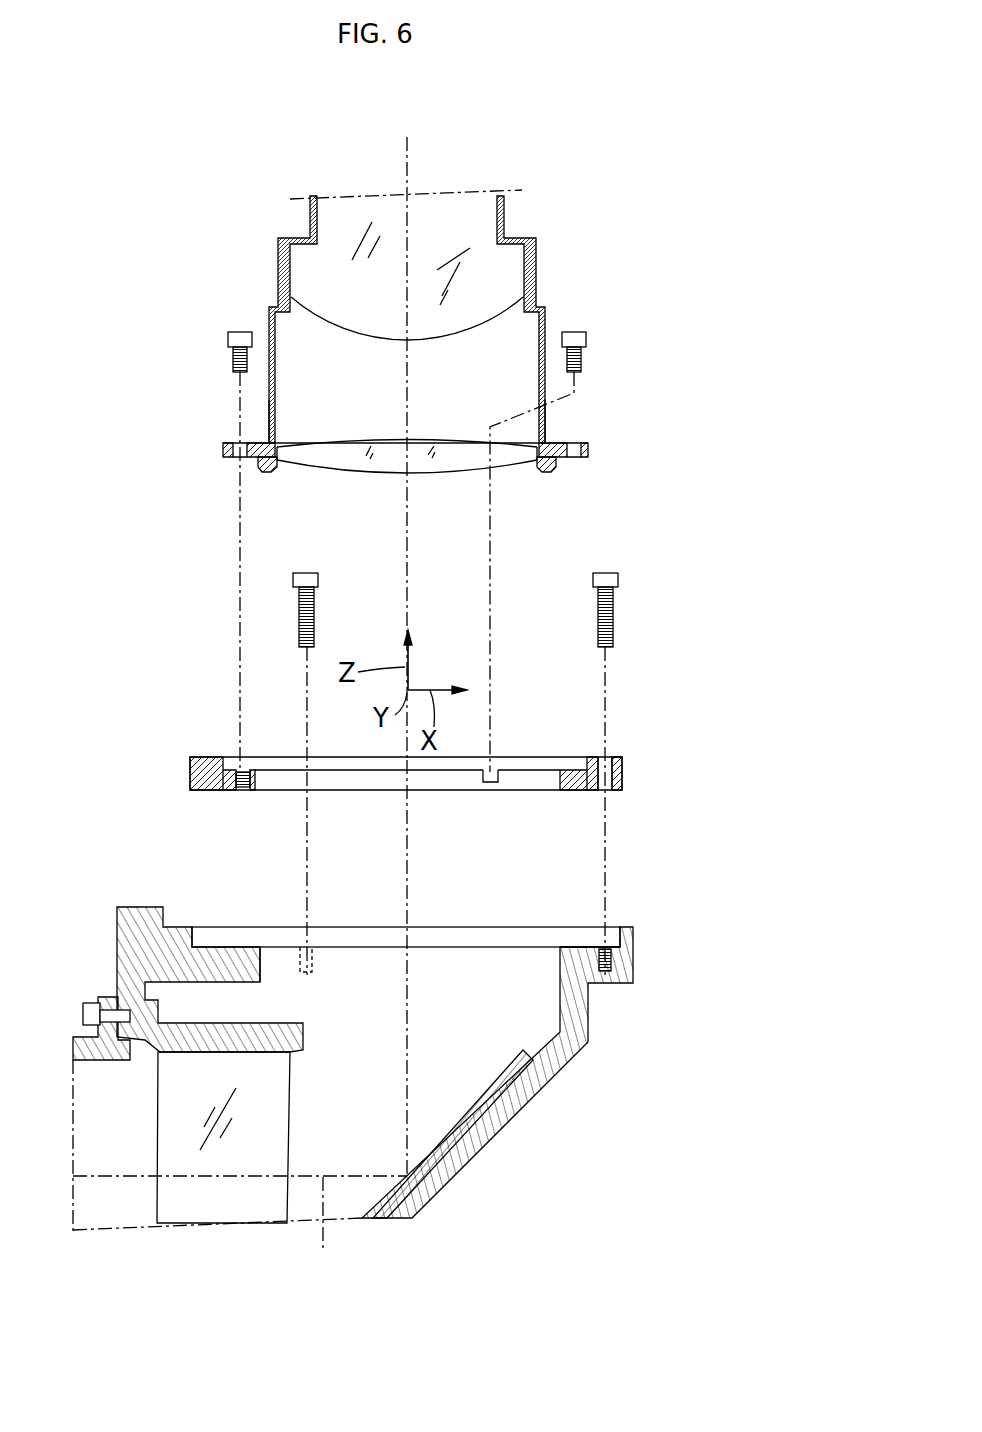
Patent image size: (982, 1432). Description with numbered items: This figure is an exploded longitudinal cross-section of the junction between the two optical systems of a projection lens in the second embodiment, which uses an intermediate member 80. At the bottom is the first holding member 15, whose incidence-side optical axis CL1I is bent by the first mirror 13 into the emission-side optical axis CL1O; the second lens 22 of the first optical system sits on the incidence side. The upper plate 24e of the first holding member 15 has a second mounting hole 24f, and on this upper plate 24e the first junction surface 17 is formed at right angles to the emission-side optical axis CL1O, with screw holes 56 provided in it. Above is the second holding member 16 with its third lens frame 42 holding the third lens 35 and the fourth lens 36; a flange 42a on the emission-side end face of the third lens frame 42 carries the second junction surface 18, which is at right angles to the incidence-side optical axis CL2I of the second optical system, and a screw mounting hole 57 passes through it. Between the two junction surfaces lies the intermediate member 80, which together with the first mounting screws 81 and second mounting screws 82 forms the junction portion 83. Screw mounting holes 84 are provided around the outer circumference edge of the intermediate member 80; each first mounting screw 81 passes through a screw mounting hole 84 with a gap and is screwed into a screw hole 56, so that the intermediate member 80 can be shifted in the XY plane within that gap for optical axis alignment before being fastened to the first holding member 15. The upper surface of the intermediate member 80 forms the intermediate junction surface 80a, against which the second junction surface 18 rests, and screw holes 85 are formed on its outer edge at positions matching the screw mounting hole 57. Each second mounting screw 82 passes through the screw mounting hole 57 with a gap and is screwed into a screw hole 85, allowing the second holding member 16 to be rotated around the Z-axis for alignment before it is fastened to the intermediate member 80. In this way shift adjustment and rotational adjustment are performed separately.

The first mirror 13 is at (563, 1067).
The first holding member 15 is at (140, 907).
The second holding member 16 is at (537, 280).
The first junction surface 17 is at (580, 943).
The second junction surface 18 is at (585, 458).
The second lens 22 is at (227, 1193).
The upper plate 24e is at (247, 947).
The second mounting hole 24f is at (260, 967).
The third lens 35 is at (428, 450).
The fourth lens 36 is at (475, 217).
The third lens frame 42 is at (545, 318).
The flange 42a is at (228, 446).
The screw hole 56 is at (314, 958).
The screw mounting hole 57 is at (235, 458).
The intermediate member 80 is at (622, 774).
The intermediate junction surface 80a is at (250, 768).
The first mounting screw 81 is at (318, 607).
The second mounting screw 82 is at (230, 360).
The junction portion 83 is at (687, 622).
The screw mounting hole 84 is at (608, 760).
The screw hole 85 is at (237, 765).
The incidence-side optical axis CL2I is at (410, 534).
The emission-side optical axis CL1O is at (410, 845).
The incidence-side optical axis CL1I is at (323, 1248).